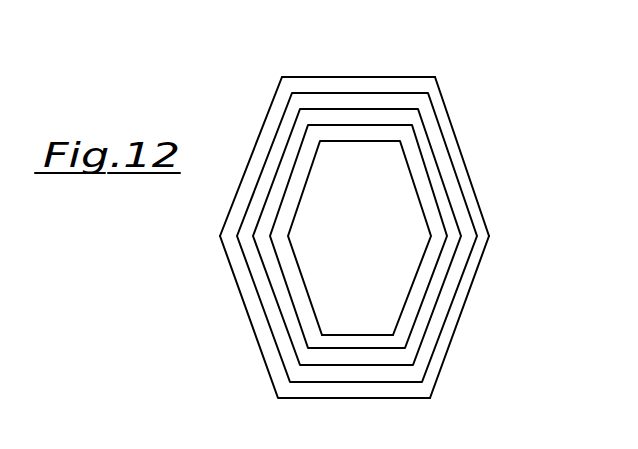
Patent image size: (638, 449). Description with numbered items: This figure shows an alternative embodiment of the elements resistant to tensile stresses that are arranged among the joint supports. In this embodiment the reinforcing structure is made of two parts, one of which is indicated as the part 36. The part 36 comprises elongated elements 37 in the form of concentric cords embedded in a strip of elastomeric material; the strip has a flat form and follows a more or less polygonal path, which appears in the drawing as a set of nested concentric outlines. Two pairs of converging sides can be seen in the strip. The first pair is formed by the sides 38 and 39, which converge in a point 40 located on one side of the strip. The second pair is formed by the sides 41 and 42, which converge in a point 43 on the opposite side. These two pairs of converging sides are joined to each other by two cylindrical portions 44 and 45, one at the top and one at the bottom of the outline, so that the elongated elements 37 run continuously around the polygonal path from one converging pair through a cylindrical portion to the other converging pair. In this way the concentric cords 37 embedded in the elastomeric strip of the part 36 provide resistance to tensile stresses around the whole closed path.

The reinforcing structure part 36 is at (226, 306).
The elongated elements 37 is at (285, 188).
The side 38 is at (458, 142).
The side 39 is at (457, 327).
The point 40 is at (462, 237).
The side 41 is at (255, 343).
The side 42 is at (283, 80).
The point 43 is at (237, 237).
The cylindrical portion 44 is at (367, 335).
The cylindrical portion 45 is at (360, 132).